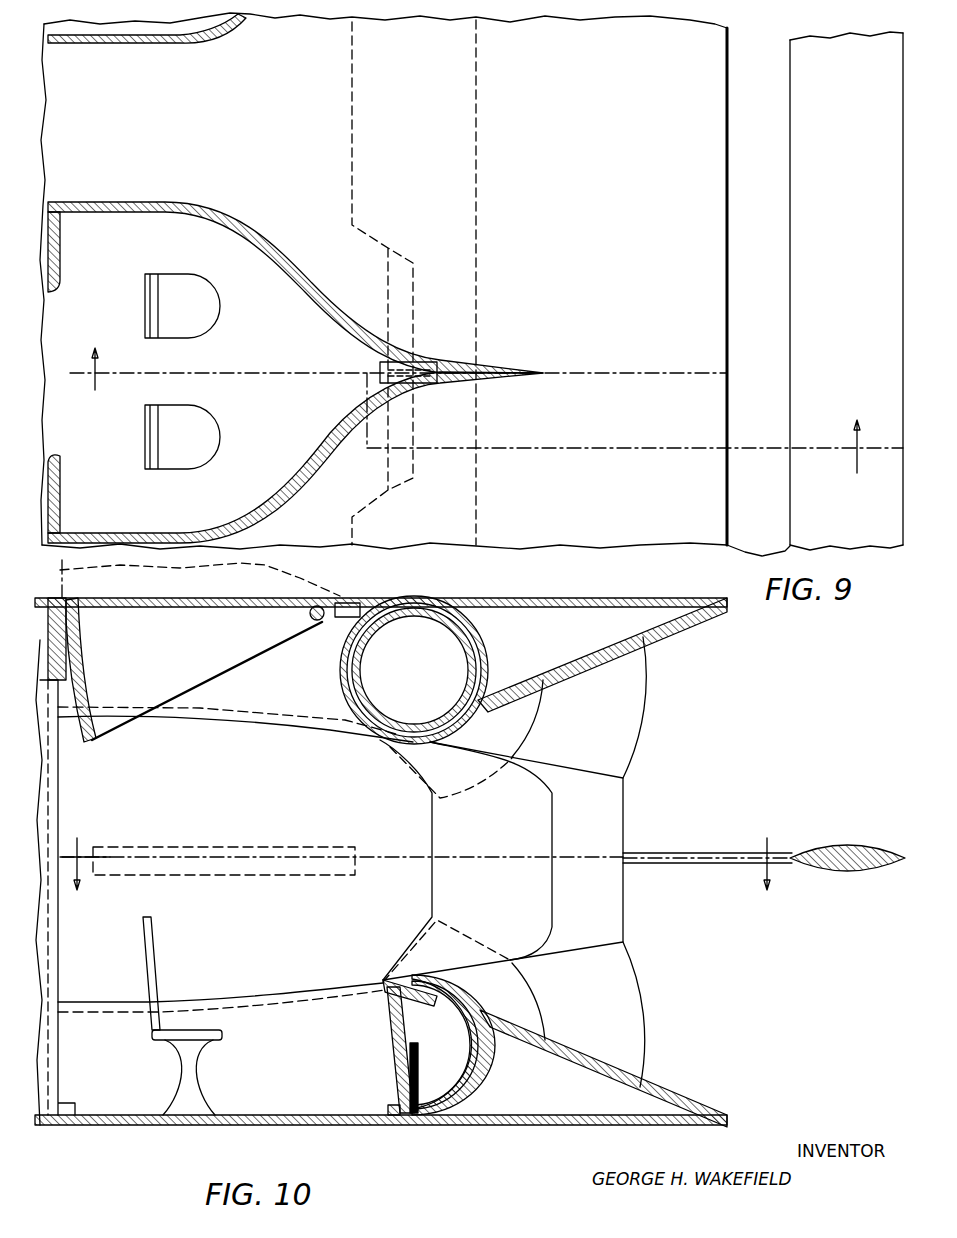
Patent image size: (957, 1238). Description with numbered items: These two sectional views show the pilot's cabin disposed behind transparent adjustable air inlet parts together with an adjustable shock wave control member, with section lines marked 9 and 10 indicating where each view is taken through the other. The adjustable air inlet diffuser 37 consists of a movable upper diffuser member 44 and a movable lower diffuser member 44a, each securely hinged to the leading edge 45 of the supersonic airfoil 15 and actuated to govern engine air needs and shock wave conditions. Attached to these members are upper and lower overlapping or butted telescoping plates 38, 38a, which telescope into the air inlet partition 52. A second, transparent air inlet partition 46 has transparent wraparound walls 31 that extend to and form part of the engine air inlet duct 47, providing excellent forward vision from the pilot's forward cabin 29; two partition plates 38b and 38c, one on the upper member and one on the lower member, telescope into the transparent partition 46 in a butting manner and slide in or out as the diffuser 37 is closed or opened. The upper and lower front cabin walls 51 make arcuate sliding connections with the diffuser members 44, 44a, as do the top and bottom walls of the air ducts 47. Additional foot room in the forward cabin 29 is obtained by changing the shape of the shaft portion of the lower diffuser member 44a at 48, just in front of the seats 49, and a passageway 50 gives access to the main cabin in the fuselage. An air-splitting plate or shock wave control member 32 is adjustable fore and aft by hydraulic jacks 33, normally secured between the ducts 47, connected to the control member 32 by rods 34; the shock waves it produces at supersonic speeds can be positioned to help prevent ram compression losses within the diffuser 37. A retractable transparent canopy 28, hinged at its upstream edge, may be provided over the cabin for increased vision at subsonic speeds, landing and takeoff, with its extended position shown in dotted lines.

In FIG. 10, the section line of FIG. 9 is at (420, 865).
In FIG. 9, the section line of FIG. 10 is at (476, 410).
In FIG. 10, the supersonic airfoil 15 is at (130, 1125).
In FIG. 10, the retractable transparent canopy 28 is at (182, 598).
In FIG. 9, the forward cabin 29 is at (285, 421).
In FIG. 10, the forward cabin 29 is at (298, 1058).
In FIG. 9, the transparent wraparound walls 31 is at (312, 290).
In FIG. 10, the transparent wraparound walls 31 is at (358, 794).
In FIG. 9, the shock wave control member 32 is at (790, 152).
In FIG. 10, the shock wave control member 32 is at (848, 878).
In FIG. 10, the hydraulic jack 33 is at (196, 847).
In FIG. 10, the rod 34 is at (700, 857).
In FIG. 9, the adjustable air inlet diffuser 37 is at (618, 196).
In FIG. 10, the adjustable air inlet diffuser 37 is at (598, 711).
In FIG. 10, the upper telescoping plate 38 is at (644, 690).
In FIG. 10, the lower telescoping plate 38a is at (636, 995).
In FIG. 10, the partition plate 38b is at (532, 745).
In FIG. 10, the partition plate 38c is at (533, 993).
In FIG. 10, the upper diffuser member 44 is at (720, 612).
In FIG. 9, the lower diffuser member 44a is at (727, 272).
In FIG. 10, the lower diffuser member 44a is at (690, 1112).
In FIG. 10, the leading edge 45 is at (394, 598).
In FIG. 9, the air inlet partition 46 is at (505, 372).
In FIG. 10, the air inlet partition 46 is at (552, 905).
In FIG. 9, the engine air inlet duct 47 is at (152, 45).
In FIG. 10, the engine air inlet duct 47 is at (228, 724).
In FIG. 9, the reshaped shaft portion 48 is at (413, 284).
In FIG. 10, the reshaped shaft portion 48 is at (398, 1044).
In FIG. 9, the seat 49 is at (196, 272).
In FIG. 10, the seat 49 is at (155, 955).
In FIG. 9, the passageway 50 is at (44, 398).
In FIG. 10, the passageway 50 is at (50, 787).
In FIG. 10, the front cabin wall 51 is at (340, 668).
In FIG. 10, the air inlet partition 52 is at (623, 812).